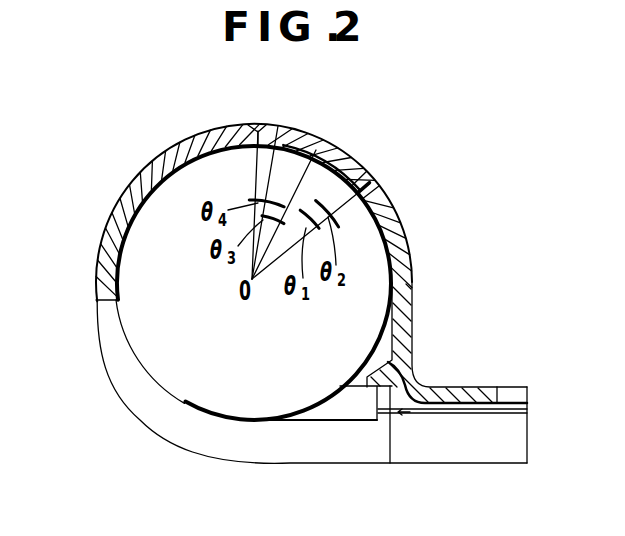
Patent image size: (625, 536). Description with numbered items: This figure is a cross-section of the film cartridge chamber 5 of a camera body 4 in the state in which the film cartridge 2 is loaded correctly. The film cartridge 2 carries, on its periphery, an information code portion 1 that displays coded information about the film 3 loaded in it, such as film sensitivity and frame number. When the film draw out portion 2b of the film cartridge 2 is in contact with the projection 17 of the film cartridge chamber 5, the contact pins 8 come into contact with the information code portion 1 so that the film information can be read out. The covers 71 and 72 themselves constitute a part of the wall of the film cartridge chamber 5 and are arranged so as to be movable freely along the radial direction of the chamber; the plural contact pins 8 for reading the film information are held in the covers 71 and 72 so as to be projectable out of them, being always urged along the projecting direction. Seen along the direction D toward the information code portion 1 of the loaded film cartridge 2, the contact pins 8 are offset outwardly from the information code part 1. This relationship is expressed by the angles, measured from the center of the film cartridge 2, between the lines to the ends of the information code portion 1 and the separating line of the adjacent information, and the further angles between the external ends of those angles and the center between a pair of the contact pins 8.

The information code portion 1 is at (260, 152).
The film cartridge 2 is at (180, 408).
The film draw out portion 2b is at (331, 409).
The film 3 is at (386, 414).
The camera body 4 is at (463, 482).
The film cartridge chamber 5 is at (221, 348).
The contact pins 8 is at (280, 150).
The projection 17 is at (381, 354).
The cover 71 is at (370, 178).
The cover 72 is at (287, 123).
The direction D is at (339, 123).